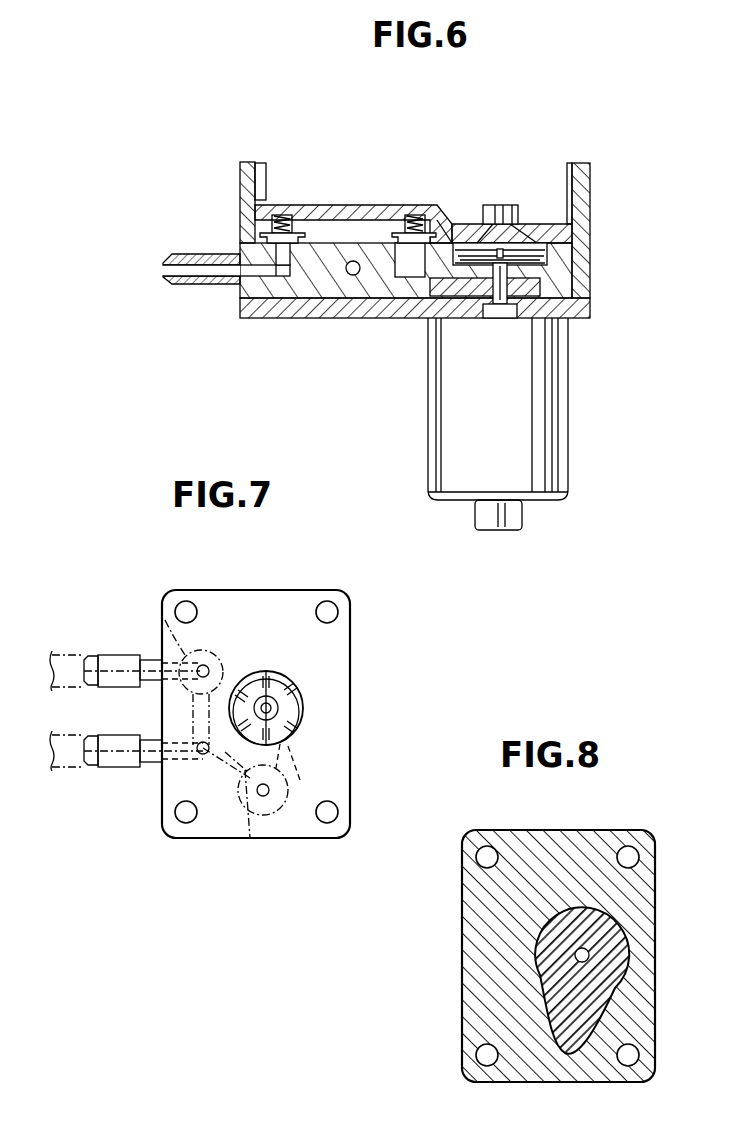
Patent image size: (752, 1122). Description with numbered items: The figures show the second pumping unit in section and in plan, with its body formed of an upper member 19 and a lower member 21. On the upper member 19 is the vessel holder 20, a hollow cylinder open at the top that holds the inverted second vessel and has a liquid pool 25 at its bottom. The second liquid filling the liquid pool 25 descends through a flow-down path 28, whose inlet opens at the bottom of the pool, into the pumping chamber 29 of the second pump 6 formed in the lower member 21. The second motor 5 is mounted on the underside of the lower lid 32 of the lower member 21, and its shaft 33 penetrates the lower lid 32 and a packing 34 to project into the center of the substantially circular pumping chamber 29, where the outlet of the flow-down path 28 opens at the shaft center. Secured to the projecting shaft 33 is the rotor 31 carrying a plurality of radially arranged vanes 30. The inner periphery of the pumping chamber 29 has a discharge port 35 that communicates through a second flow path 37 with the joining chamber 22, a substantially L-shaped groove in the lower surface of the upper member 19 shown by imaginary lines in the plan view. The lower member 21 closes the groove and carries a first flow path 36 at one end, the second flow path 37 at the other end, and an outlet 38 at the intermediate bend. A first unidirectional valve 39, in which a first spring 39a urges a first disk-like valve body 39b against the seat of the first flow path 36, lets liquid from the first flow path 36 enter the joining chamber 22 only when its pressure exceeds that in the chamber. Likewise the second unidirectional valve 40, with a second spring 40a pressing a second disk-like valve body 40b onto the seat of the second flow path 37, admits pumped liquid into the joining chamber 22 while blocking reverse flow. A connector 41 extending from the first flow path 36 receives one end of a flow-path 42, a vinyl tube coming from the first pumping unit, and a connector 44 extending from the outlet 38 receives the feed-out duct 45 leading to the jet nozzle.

In FIG. 6, the second motor 5 is at (535, 405).
In FIG. 6, the second pump 6 is at (648, 228).
In FIG. 7, the second pump 6 is at (383, 708).
In FIG. 6, the upper member 19 is at (248, 222).
In FIG. 6, the vessel holder 20 is at (590, 166).
In FIG. 6, the lower member 21 is at (374, 287).
In FIG. 7, the lower member 21 is at (212, 590).
In FIG. 8, the lower member 21 is at (516, 835).
In FIG. 6, the joining chamber 22 is at (352, 216).
In FIG. 7, the joining chamber 22 is at (205, 735).
In FIG. 6, the liquid pool 25 is at (556, 210).
In FIG. 6, the flow-down path 28 is at (503, 210).
In FIG. 6, the pumping chamber 29 is at (548, 254).
In FIG. 7, the pumping chamber 29 is at (300, 730).
In FIG. 6, the vanes 30 is at (466, 256).
In FIG. 7, the vanes 30 is at (300, 688).
In FIG. 6, the rotor 31 is at (548, 262).
In FIG. 7, the rotor 31 is at (303, 712).
In FIG. 6, the lower lid 32 is at (318, 306).
In FIG. 6, the shaft 33 is at (560, 288).
In FIG. 7, the shaft 33 is at (262, 700).
In FIG. 8, the shaft 33 is at (610, 940).
In FIG. 6, the packing 34 is at (588, 312).
In FIG. 8, the packing 34 is at (590, 955).
In FIG. 6, the discharge port 35 is at (446, 245).
In FIG. 7, the discharge port 35 is at (295, 770).
In FIG. 6, the first flow path 36 is at (258, 272).
In FIG. 7, the first flow path 36 is at (206, 668).
In FIG. 6, the second flow path 37 is at (405, 268).
In FIG. 7, the second flow path 37 is at (266, 796).
In FIG. 6, the outlet 38 is at (351, 276).
In FIG. 7, the outlet 38 is at (203, 754).
In FIG. 6, the first unidirectional valve 39 is at (311, 158).
In FIG. 7, the first unidirectional valve 39 is at (165, 620).
In FIG. 6, the first spring 39a is at (282, 214).
In FIG. 6, the first disk-like valve body 39b is at (304, 236).
In FIG. 6, the second unidirectional valve 40 is at (444, 156).
In FIG. 7, the second unidirectional valve 40 is at (252, 806).
In FIG. 6, the second spring 40a is at (415, 214).
In FIG. 6, the second disk-like valve body 40b is at (434, 236).
In FIG. 6, the connector 41 is at (178, 290).
In FIG. 7, the connector 41 is at (128, 656).
In FIG. 7, the flow-path 42 is at (62, 650).
In FIG. 7, the connector 44 is at (128, 768).
In FIG. 7, the feed-out duct 45 is at (62, 765).